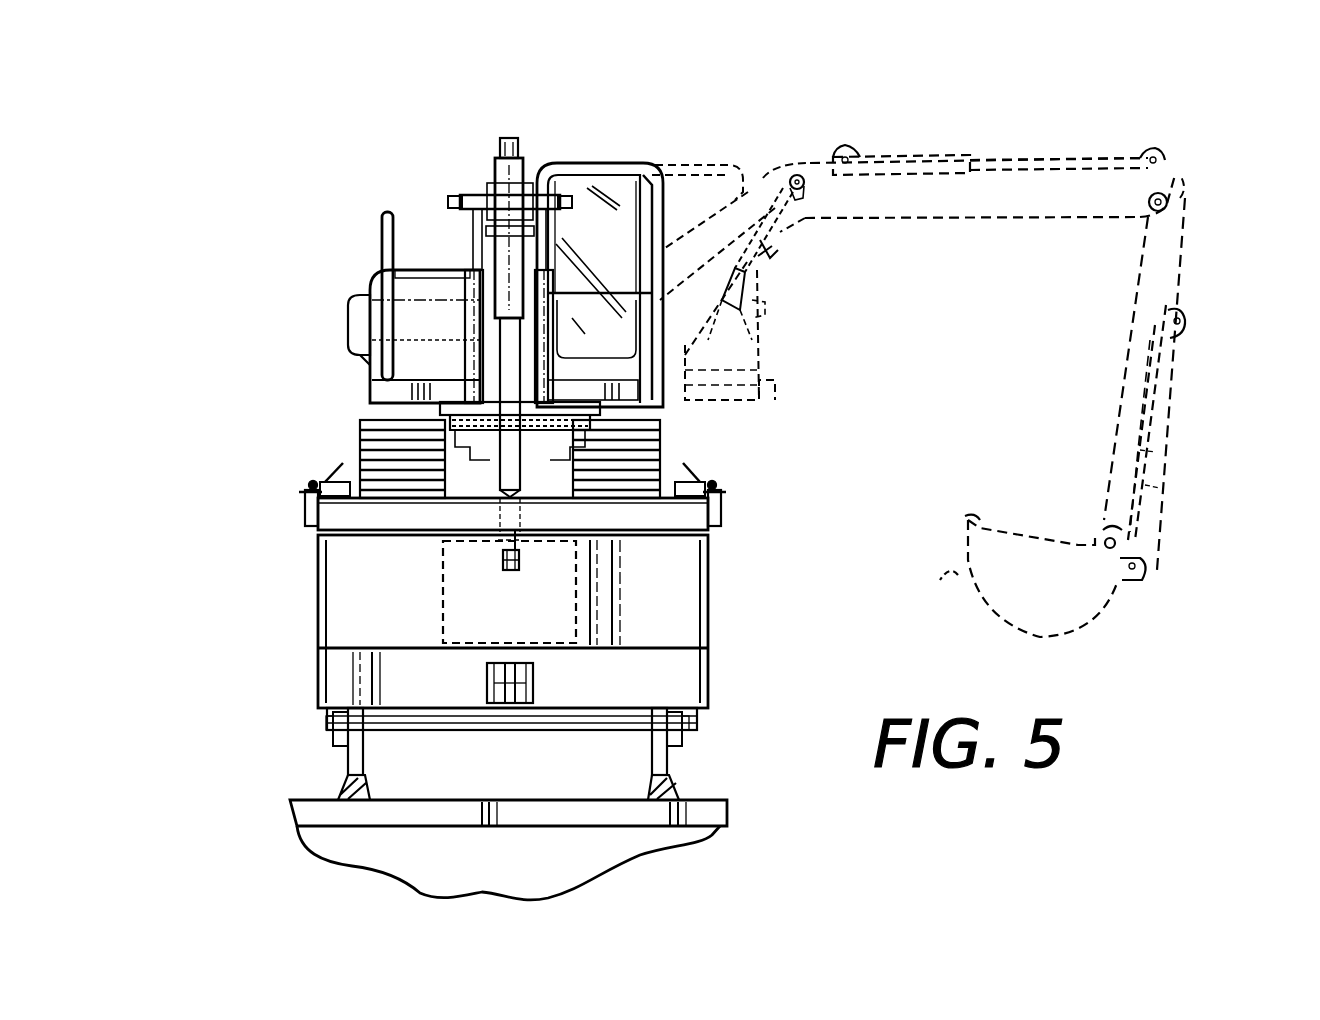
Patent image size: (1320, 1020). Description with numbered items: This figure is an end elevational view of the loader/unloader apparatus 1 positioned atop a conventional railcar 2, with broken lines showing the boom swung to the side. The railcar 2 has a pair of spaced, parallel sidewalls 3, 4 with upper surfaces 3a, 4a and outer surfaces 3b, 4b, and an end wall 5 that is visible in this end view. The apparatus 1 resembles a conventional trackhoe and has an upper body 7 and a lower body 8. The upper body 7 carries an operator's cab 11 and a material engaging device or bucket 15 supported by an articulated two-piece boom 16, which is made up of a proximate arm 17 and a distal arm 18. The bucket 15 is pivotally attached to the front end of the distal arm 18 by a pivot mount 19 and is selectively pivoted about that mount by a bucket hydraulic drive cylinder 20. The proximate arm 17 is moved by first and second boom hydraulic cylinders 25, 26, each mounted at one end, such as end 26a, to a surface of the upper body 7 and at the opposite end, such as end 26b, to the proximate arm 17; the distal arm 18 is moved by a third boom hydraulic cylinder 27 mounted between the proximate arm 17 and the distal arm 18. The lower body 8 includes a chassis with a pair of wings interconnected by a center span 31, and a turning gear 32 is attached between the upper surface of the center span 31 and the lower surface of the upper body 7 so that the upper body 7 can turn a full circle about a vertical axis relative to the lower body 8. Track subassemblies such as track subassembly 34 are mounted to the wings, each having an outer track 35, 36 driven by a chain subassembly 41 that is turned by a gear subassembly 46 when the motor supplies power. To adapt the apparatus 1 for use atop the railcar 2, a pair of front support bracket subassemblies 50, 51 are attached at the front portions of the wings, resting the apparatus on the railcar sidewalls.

The loader/unloader apparatus 1 is at (316, 180).
The railcar 2 is at (288, 565).
The sidewall 3 is at (318, 627).
The upper surface 3a is at (312, 520).
The outer surface 3b is at (328, 516).
The sidewall 4 is at (708, 604).
The upper surface 4a is at (718, 514).
The outer surface 4b is at (700, 518).
The end wall 5 is at (672, 582).
The upper body 7 is at (370, 262).
The lower body 8 is at (318, 427).
The operator's cab 11 is at (607, 165).
The bucket 15 is at (970, 580).
The boom 16 is at (1190, 187).
The proximate arm 17 is at (864, 213).
The distal arm 18 is at (1140, 326).
The pivot mount 19 is at (1103, 530).
The bucket hydraulic drive cylinder 20 is at (1150, 452).
The first boom hydraulic cylinder 25 is at (468, 312).
The second boom hydraulic cylinder 26 is at (560, 306).
The end of second boom hydraulic cylinder 26a is at (748, 397).
The opposite end of second boom hydraulic cylinder 26b is at (560, 200).
The third boom hydraulic cylinder 27 is at (905, 160).
The center span 31 is at (460, 425).
The turning gear 32 is at (598, 405).
The track subassembly 34 is at (525, 480).
The outer track 35 is at (360, 470).
The outer track 36 is at (625, 472).
The chain subassembly 41 is at (540, 480).
The gear subassembly 46 is at (503, 557).
The front support bracket subassembly 50 is at (302, 484).
The front support bracket subassembly 51 is at (724, 482).